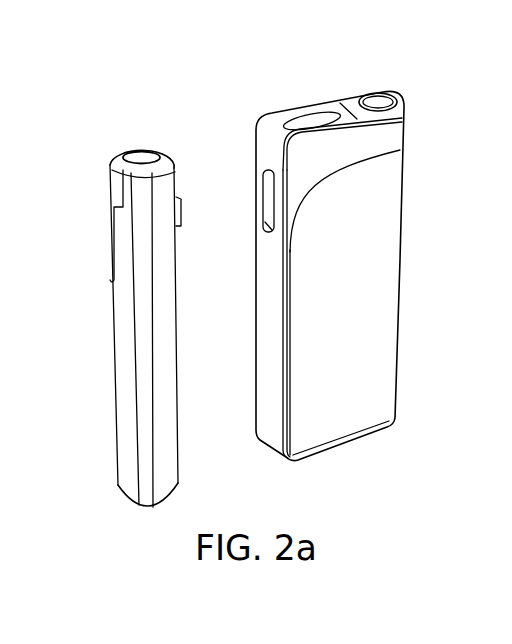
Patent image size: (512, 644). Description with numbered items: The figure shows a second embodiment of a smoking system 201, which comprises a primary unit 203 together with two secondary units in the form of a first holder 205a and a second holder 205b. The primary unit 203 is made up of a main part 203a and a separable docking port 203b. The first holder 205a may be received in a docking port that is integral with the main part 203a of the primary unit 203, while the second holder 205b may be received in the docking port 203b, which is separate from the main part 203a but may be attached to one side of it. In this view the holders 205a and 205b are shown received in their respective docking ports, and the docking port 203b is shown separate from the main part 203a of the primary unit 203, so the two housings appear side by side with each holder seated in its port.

The smoking system 201 is at (203, 89).
The primary unit 203 is at (300, 480).
The main part 203a is at (383, 342).
The docking port 203b is at (128, 454).
The first holder 205a is at (377, 101).
The second holder 205b is at (141, 155).